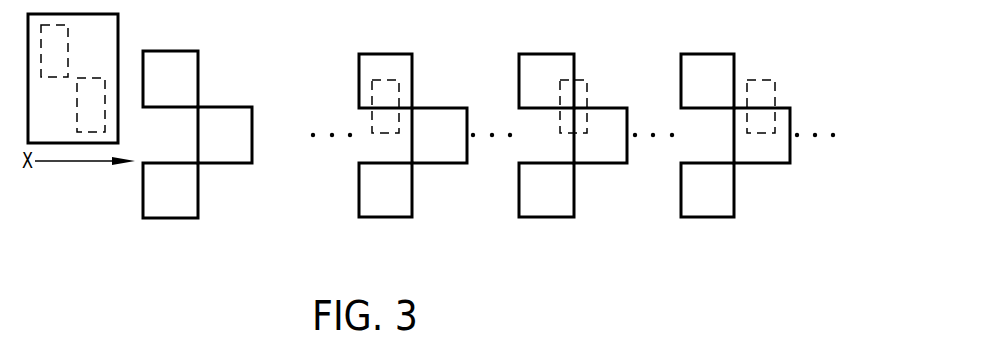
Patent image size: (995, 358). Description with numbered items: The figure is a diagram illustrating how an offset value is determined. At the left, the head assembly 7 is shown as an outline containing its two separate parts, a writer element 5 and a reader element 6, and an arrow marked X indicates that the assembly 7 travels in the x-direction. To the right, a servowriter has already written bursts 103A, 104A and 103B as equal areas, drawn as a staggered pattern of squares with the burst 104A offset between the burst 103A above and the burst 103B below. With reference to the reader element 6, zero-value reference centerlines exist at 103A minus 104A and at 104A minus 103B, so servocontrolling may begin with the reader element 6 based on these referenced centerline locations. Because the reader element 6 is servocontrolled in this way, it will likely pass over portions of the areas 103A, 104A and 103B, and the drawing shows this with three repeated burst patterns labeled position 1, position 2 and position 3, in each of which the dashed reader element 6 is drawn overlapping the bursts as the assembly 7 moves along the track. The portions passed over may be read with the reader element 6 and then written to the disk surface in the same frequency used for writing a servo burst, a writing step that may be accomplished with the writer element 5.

The position 1 is at (398, 253).
The position 2 is at (558, 253).
The position 3 is at (720, 253).
The writer element 5 is at (54, 51).
The reader element 6 is at (426, 105).
The head assembly 7 is at (56, 121).
The burst area 103A is at (438, 79).
The burst area 103B is at (438, 191).
The burst area 104A is at (494, 135).